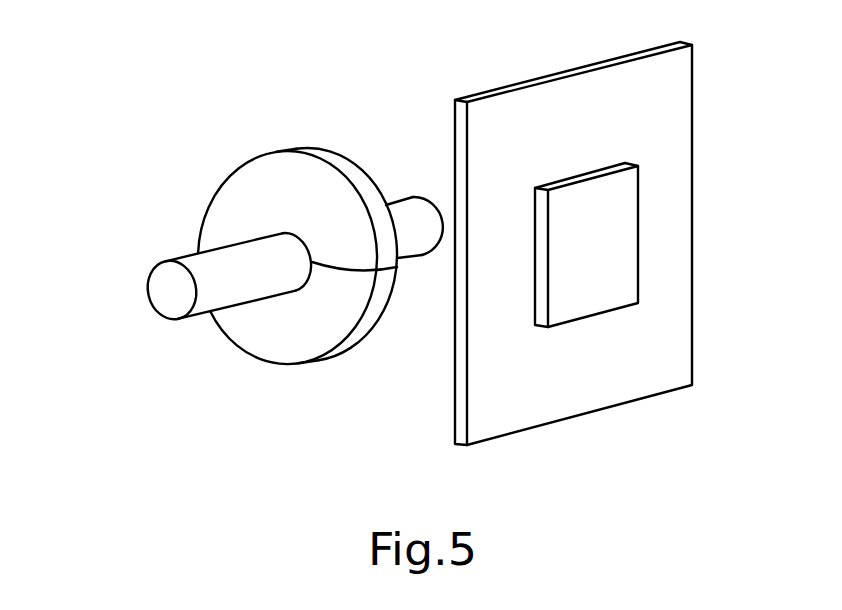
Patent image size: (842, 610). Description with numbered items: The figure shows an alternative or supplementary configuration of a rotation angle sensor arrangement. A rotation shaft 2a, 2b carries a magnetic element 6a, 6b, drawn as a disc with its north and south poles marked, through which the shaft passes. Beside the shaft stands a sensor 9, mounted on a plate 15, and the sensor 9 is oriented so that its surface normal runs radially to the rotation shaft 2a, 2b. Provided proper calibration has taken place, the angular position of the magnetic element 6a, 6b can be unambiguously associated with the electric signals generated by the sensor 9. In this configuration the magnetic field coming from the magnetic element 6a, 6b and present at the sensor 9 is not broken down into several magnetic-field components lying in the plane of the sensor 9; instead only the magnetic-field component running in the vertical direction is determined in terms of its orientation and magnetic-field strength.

The rotation shaft 2a is at (232, 278).
The rotation shaft 2b is at (420, 218).
The magnetic element 6a is at (312, 333).
The magnetic element 6b is at (336, 255).
The sensor 9 is at (612, 218).
The circuit board / carrier plate 15 is at (583, 392).